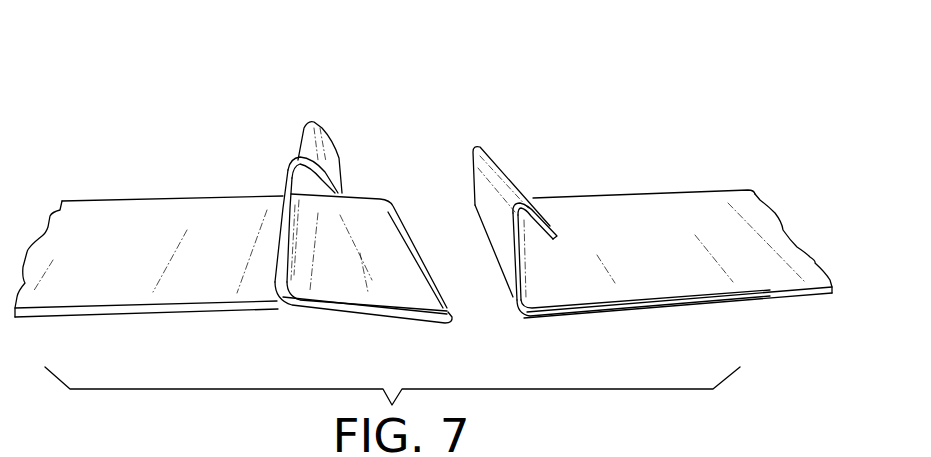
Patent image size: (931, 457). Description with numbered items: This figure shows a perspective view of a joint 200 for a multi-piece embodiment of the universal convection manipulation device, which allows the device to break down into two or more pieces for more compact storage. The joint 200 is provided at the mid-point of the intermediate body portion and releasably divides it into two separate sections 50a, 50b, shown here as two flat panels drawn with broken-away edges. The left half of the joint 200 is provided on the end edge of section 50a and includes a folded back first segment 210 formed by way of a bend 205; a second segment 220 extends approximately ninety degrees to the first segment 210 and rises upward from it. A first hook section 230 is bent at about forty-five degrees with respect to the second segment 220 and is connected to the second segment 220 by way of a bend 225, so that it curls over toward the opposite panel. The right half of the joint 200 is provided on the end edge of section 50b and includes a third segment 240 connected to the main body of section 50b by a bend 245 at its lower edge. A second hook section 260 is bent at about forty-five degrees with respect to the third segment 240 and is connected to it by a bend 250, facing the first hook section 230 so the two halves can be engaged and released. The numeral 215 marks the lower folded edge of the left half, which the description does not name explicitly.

The joint 200 is at (498, 111).
The section 50a is at (116, 194).
The section 50b is at (687, 189).
The bend 205 is at (425, 267).
The first segment 210 is at (348, 220).
The folded bottom edge of first clip 215 is at (267, 290).
The second segment 220 is at (283, 207).
The bend 225 is at (303, 156).
The first hook section 230 is at (328, 169).
The third segment 240 is at (513, 257).
The bend 245 is at (522, 312).
The bend 250 is at (518, 201).
The second hook section 260 is at (541, 217).